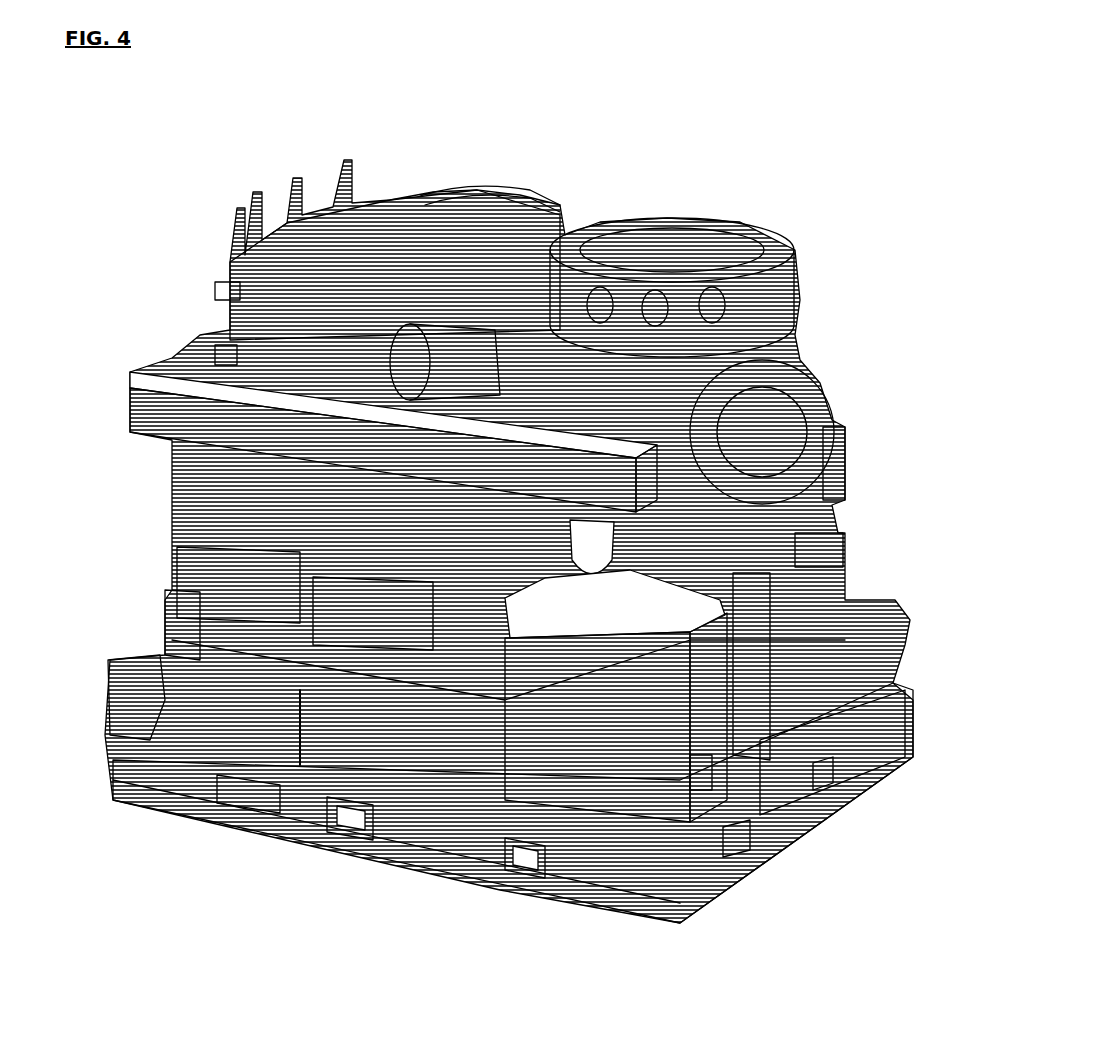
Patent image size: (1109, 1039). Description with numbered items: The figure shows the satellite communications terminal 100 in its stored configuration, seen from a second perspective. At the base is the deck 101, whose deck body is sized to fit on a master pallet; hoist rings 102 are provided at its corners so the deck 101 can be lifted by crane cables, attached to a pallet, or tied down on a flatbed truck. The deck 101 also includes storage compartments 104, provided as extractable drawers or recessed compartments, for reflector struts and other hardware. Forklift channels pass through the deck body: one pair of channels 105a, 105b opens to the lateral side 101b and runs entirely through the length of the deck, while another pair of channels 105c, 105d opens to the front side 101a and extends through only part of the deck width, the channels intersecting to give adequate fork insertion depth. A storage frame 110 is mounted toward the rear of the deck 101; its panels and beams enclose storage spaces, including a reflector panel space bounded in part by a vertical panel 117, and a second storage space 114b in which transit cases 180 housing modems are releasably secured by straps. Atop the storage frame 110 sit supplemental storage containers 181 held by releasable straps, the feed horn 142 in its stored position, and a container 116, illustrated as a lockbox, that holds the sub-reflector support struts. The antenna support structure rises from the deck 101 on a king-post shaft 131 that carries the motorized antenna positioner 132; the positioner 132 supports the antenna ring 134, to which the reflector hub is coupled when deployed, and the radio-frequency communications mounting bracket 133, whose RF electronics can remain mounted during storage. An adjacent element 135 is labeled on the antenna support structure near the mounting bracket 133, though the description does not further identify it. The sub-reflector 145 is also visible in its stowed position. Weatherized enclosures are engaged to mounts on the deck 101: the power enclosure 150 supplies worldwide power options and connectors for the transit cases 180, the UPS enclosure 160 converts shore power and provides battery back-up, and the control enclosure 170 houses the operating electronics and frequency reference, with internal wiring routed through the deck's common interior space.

The satellite communications terminal 100 is at (708, 116).
The deck 101 is at (913, 720).
The front side of the deck 101a is at (857, 767).
The lateral side of the deck 101b is at (313, 807).
The hoist rings 102 is at (147, 710).
The storage compartments 104 is at (243, 810).
The channel 105a is at (525, 870).
The channel 105b is at (343, 830).
The channel 105c is at (733, 847).
The channel 105d is at (820, 790).
The storage frame 110 is at (140, 625).
The second storage space 114b is at (187, 603).
The container 116 is at (175, 415).
The vertical panel 117 is at (300, 690).
The king-post shaft 131 is at (752, 693).
The motorized antenna positioner 132 is at (813, 390).
The radio-frequency communications mounting bracket 133 is at (490, 208).
The antenna ring 134 is at (733, 228).
The guide rail 135 is at (427, 192).
The feed horn 142 is at (435, 332).
The sub-reflector 145 is at (593, 558).
The power enclosure 150 is at (550, 757).
The UPS enclosure 160 is at (700, 763).
The control enclosure 170 is at (827, 540).
The transit cases 180 is at (383, 550).
The storage containers 181 is at (230, 353).